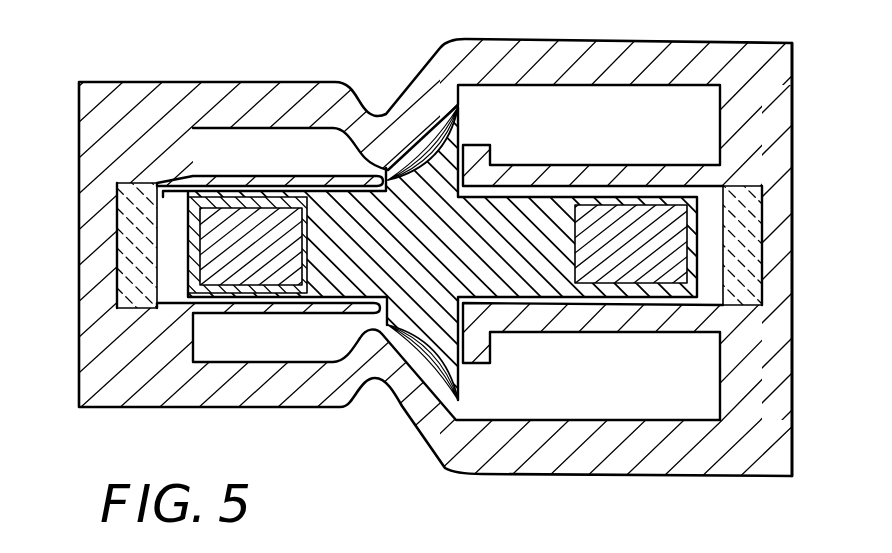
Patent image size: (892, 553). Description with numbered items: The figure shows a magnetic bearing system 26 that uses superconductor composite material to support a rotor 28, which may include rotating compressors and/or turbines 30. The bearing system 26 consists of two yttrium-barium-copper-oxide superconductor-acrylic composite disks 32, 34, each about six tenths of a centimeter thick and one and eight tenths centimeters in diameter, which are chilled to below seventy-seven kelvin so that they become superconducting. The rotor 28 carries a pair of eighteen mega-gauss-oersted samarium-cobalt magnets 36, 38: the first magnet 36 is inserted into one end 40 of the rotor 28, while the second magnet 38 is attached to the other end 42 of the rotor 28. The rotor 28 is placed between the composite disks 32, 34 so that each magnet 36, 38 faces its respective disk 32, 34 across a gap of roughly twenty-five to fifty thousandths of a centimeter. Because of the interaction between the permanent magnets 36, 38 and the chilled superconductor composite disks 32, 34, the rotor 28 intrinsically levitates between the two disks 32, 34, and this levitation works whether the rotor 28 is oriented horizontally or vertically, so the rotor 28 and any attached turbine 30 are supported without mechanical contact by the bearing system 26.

The magnetic bearing system 26 is at (212, 66).
The rotor 28 is at (512, 197).
The turbine 30 is at (437, 363).
The superconductor-acrylic composite disk 32 is at (117, 303).
The superconductor-acrylic composite disk 34 is at (765, 276).
The samarium-cobalt magnet 36 is at (256, 218).
The samarium-cobalt magnet 38 is at (637, 197).
The end of the rotor 40 is at (175, 198).
The other end of the rotor 42 is at (712, 230).